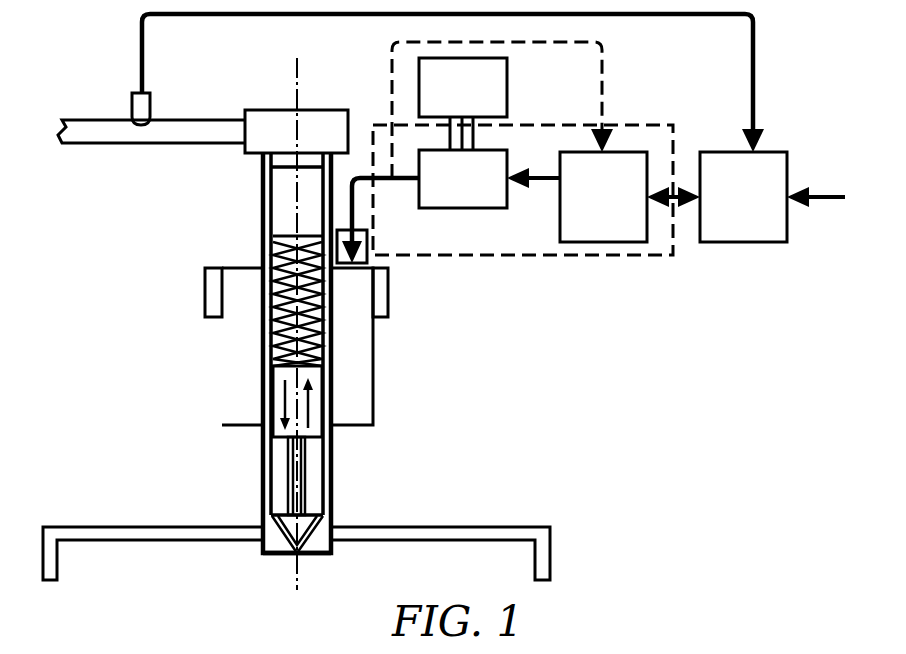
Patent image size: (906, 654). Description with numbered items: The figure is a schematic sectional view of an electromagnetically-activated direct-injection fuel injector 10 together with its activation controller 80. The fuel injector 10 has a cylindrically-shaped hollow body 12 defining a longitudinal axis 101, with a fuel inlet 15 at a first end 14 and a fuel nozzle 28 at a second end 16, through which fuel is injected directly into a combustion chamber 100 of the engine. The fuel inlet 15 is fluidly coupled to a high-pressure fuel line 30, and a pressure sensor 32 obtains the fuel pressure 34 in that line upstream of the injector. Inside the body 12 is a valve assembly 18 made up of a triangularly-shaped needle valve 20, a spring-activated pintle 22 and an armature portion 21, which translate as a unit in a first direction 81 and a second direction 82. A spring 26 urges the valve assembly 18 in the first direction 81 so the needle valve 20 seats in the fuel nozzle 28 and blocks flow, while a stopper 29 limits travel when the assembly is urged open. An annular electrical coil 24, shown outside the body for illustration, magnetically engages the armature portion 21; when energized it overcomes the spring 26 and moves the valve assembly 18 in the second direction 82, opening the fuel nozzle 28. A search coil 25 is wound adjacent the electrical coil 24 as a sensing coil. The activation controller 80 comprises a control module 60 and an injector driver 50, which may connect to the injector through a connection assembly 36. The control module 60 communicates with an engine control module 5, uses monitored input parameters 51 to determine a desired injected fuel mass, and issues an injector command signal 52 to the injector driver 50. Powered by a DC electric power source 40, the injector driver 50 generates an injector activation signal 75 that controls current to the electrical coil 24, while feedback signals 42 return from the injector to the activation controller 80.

The engine control module 5 is at (752, 210).
The fuel injector 10 is at (212, 345).
The body 12 is at (276, 225).
The first end 14 is at (238, 162).
The fuel inlet 15 is at (248, 150).
The second end 16 is at (342, 520).
The valve assembly 18 is at (278, 464).
The needle valve 20 is at (270, 521).
The armature portion 21 is at (262, 408).
The pintle 22 is at (290, 480).
The electrical coil 24 is at (356, 362).
The search coil 25 is at (205, 295).
The spring 26 is at (318, 332).
The fuel nozzle 28 is at (297, 557).
The stopper 29 is at (268, 230).
The high-pressure fuel line 30 is at (93, 120).
The pressure sensor 32 is at (152, 105).
The fuel pressure 34 is at (137, 58).
The connection assembly 36 is at (368, 240).
The electric power source 40 is at (475, 101).
The feedback signal 42 is at (386, 88).
The injector driver 50 is at (475, 193).
The monitored input parameters 51 is at (836, 193).
The injector command signal 52 is at (554, 175).
The control module 60 is at (615, 210).
The injector activation signal 75 is at (403, 206).
The activation controller 80 is at (518, 257).
The first direction 81 is at (302, 404).
The second direction 82 is at (312, 398).
The combustion chamber 100 is at (108, 573).
The longitudinal axis 101 is at (295, 80).